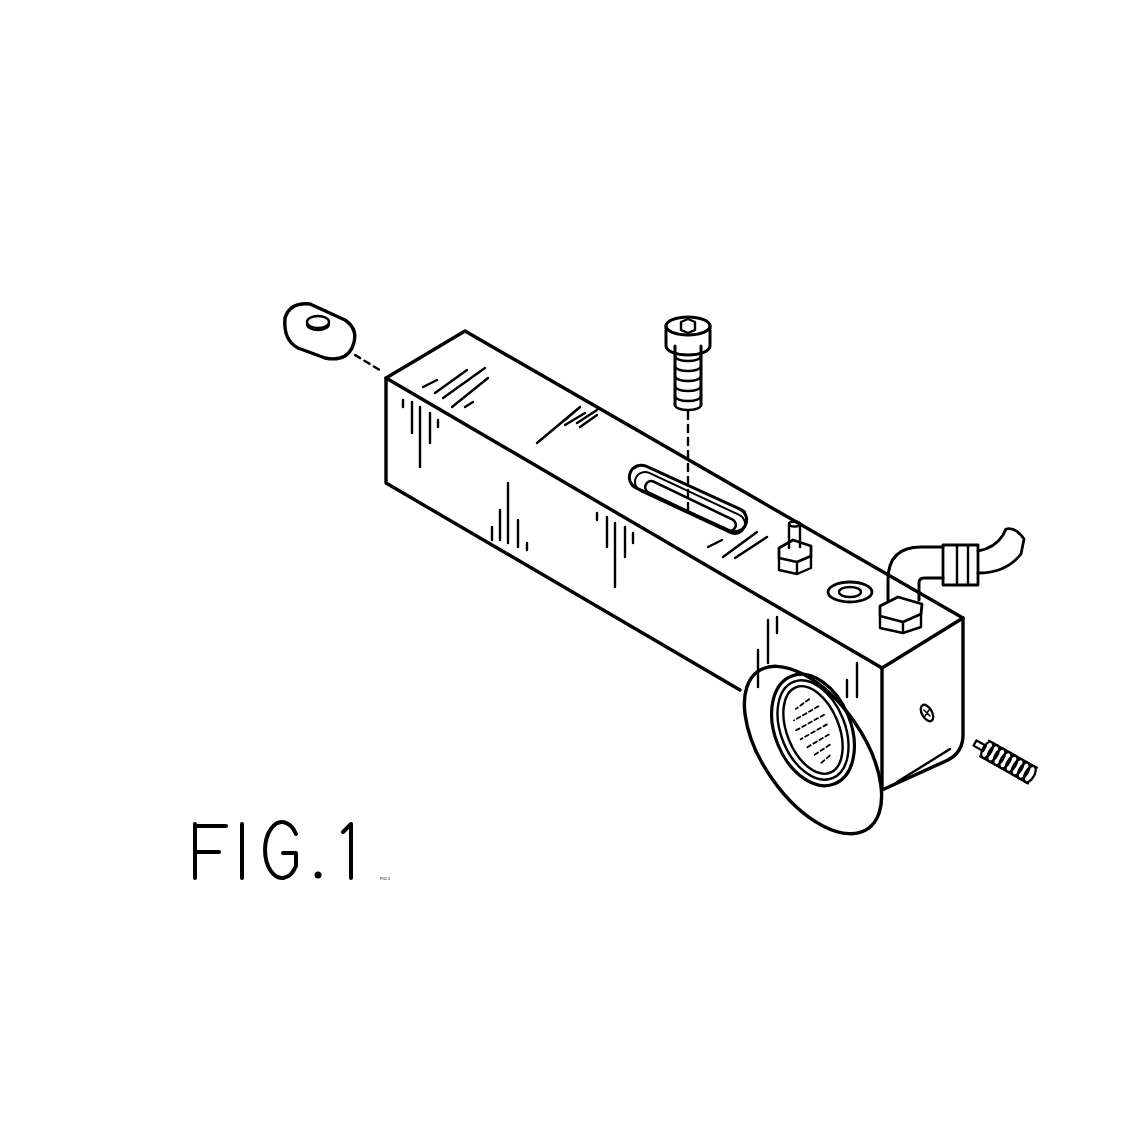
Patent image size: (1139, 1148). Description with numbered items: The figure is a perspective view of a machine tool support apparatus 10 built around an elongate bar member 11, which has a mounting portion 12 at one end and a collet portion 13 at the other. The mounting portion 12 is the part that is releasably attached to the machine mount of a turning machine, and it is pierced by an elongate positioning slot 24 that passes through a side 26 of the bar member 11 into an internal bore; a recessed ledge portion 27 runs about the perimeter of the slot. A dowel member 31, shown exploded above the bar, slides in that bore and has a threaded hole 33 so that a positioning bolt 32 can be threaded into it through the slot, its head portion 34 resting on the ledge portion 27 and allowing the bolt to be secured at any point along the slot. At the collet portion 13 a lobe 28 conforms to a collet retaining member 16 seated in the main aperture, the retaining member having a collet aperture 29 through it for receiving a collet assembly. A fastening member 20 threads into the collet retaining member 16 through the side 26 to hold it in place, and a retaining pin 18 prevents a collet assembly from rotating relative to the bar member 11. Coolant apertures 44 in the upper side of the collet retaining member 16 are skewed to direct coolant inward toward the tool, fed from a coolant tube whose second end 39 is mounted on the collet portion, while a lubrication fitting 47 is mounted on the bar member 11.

The tool holder assembly 10 is at (500, 205).
The bar member 11 is at (640, 637).
The mounting portion 12 is at (465, 485).
The collet portion 13 is at (838, 812).
The collet retaining member 16 is at (851, 760).
The retaining pin 18 is at (1040, 780).
The fastening member 20 is at (849, 588).
The positioning slot 24 is at (653, 478).
The side 26 is at (536, 410).
The ledge portion 27 is at (680, 477).
The lobe 28 is at (803, 805).
The collet aperture 29 is at (798, 746).
The dowel member 31 is at (300, 312).
The positioning bolt 32 is at (714, 357).
The threaded hole 33 is at (334, 309).
The head portion 34 is at (665, 328).
The second end 39 is at (932, 553).
The coolant apertures 44 is at (827, 693).
The locating pin 47 is at (794, 522).